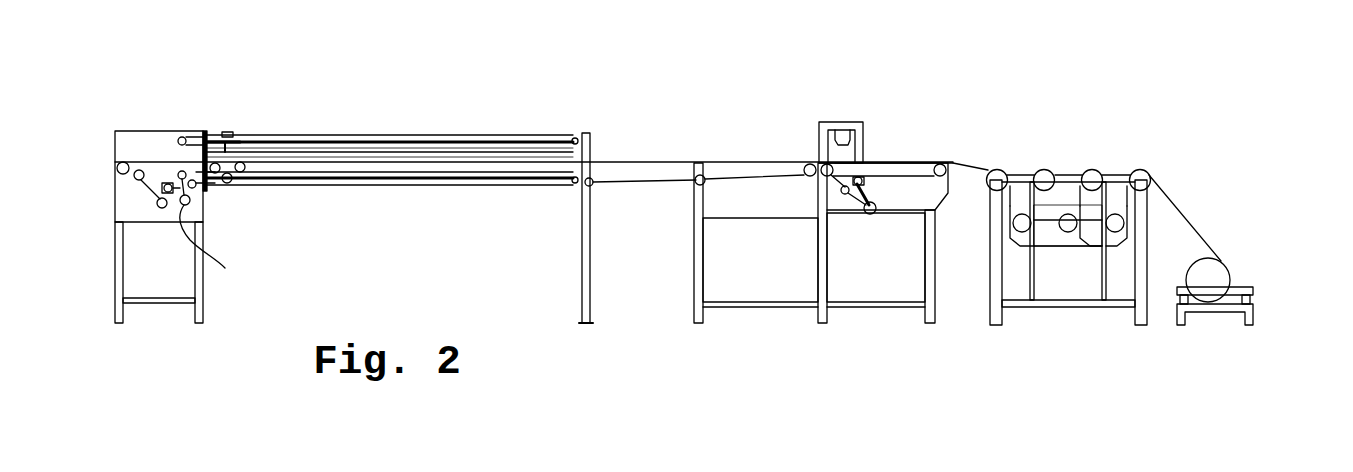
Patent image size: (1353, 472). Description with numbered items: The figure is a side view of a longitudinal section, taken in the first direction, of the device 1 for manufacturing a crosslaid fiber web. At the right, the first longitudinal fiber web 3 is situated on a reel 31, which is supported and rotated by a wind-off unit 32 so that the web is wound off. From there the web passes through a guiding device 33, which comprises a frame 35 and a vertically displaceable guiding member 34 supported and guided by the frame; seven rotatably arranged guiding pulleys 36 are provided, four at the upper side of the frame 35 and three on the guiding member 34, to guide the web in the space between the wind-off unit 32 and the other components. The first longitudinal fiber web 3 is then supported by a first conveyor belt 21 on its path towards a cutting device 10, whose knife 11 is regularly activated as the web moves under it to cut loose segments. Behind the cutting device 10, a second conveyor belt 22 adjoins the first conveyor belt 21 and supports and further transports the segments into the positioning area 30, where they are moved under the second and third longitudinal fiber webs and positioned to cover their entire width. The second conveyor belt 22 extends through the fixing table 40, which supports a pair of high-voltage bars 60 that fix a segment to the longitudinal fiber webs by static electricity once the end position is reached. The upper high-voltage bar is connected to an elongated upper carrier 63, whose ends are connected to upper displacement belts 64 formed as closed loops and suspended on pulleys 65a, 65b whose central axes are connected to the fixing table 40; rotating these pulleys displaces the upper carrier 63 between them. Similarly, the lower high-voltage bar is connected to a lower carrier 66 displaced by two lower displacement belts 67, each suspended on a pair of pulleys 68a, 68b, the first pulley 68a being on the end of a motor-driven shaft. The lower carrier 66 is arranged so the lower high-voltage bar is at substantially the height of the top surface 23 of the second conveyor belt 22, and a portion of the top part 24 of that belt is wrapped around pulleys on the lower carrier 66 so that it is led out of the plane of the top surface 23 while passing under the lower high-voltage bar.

The device 1 is at (1211, 123).
The first longitudinal fiber web 3 is at (1190, 217).
The cutting device 10 is at (794, 111).
The knife 11 is at (841, 136).
The first conveyor belt 21 is at (905, 161).
The second conveyor belt 22 is at (643, 161).
The top surface 23 is at (470, 161).
The top part 24 is at (506, 161).
The positioning area 30 is at (363, 108).
The reel 31 is at (1210, 278).
The wind-off unit 32 is at (1216, 344).
The guiding device 33 is at (1115, 131).
The guiding member 34 is at (1088, 232).
The frame 35 is at (1068, 215).
The guiding pulleys 36 is at (1043, 174).
The fixing table 40 is at (130, 103).
The pair of high-voltage bars 60 is at (223, 96).
The upper carrier 63 is at (233, 140).
The upper displacement belt 64 is at (423, 136).
The pulley 65a is at (180, 137).
The pulley 65b is at (572, 133).
The lower carrier 66 is at (242, 172).
The lower displacement belts 67 is at (382, 186).
The first pulley 68a is at (220, 249).
The pulley 68b is at (571, 181).